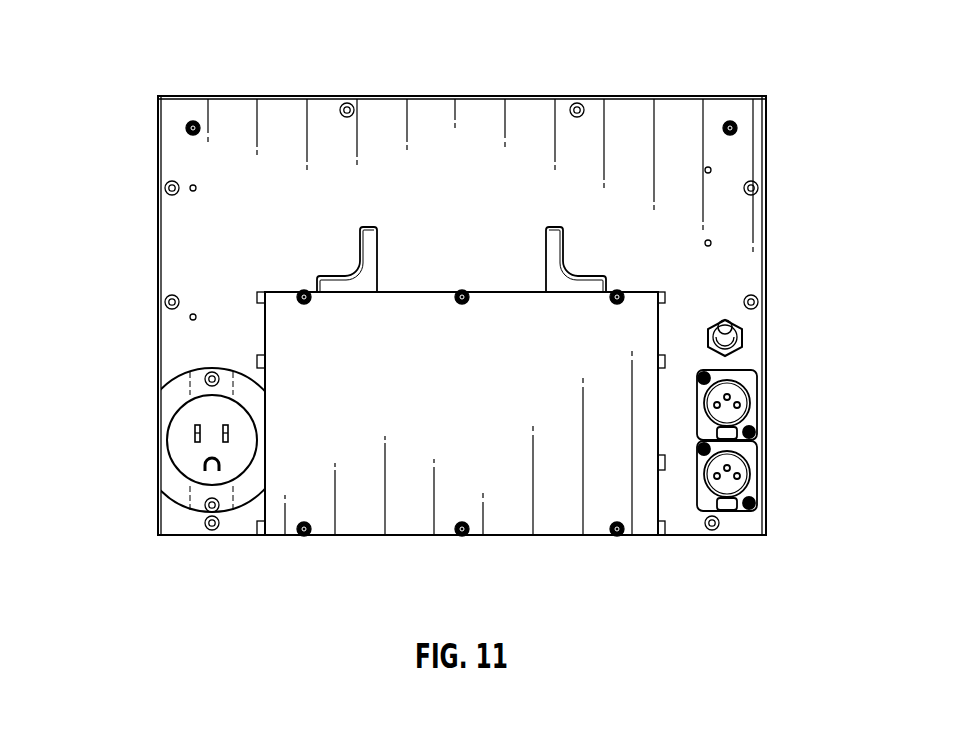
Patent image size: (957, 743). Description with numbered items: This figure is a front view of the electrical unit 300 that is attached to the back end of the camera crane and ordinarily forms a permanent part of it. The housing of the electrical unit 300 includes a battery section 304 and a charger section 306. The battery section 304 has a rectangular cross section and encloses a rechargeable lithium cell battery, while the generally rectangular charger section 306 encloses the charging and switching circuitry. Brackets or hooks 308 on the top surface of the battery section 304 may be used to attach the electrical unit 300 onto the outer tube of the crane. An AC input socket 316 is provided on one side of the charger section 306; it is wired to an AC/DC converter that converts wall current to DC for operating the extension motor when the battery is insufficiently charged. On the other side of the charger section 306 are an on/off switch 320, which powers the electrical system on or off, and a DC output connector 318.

The electrical unit 300 is at (145, 40).
The battery section 304 is at (405, 510).
The charger section 306 is at (481, 133).
The brackets 308 is at (563, 253).
The AC input socket 316 is at (172, 489).
The DC output connector 318 is at (728, 482).
The on/off switch 320 is at (735, 325).